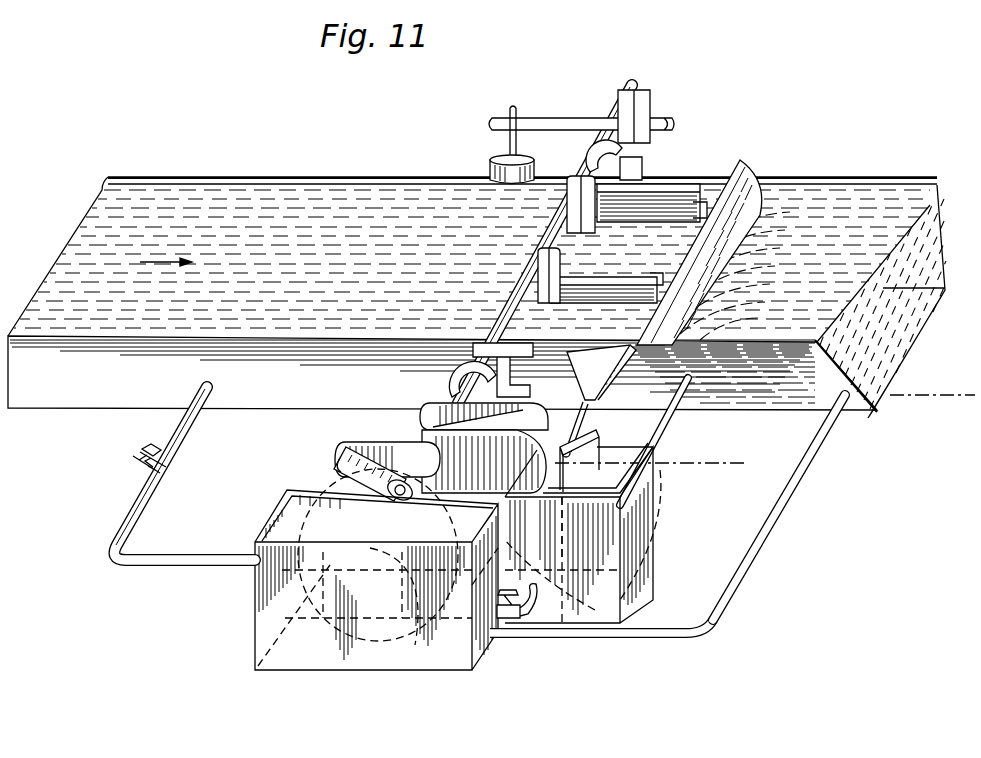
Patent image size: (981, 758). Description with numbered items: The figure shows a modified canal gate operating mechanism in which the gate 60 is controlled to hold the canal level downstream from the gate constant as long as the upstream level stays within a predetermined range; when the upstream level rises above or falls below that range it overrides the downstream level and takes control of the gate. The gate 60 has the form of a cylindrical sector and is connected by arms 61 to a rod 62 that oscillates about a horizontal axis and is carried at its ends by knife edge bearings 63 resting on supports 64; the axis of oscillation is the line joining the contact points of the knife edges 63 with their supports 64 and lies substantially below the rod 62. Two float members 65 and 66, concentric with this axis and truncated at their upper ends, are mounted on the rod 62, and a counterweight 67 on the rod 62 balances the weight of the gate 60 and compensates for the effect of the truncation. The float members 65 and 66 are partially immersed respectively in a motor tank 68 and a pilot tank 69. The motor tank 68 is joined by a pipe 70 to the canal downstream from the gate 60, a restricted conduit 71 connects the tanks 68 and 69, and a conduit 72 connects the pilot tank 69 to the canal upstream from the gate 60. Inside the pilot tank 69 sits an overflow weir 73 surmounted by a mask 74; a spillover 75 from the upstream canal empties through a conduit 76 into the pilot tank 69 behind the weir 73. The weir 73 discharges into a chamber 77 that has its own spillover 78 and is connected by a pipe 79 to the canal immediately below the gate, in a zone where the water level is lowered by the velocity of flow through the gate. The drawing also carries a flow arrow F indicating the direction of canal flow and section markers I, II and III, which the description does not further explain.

The gate 60 is at (756, 166).
The arms 61 is at (607, 290).
The rod 62 is at (548, 223).
The knife edge bearings 63 is at (622, 153).
The supports 64 is at (644, 170).
The float member 65 is at (318, 487).
The float member 66 is at (484, 448).
The counterweight 67 is at (492, 165).
The motor tank 68 is at (345, 665).
The pilot tank 69 is at (575, 640).
The pipe 70 is at (788, 510).
The restricted conduit 71 is at (535, 625).
The conduit 72 is at (163, 575).
The overflow weir 73 is at (578, 528).
The mask 74 is at (600, 442).
The spillover 75 is at (612, 370).
The conduit 76 is at (564, 448).
The chamber 77 is at (632, 605).
The spillover 78 is at (640, 493).
The pipe 79 is at (672, 430).
The flow direction arrow F is at (166, 250).
The section line I is at (748, 459).
The section line II is at (912, 412).
The section line III is at (720, 365).